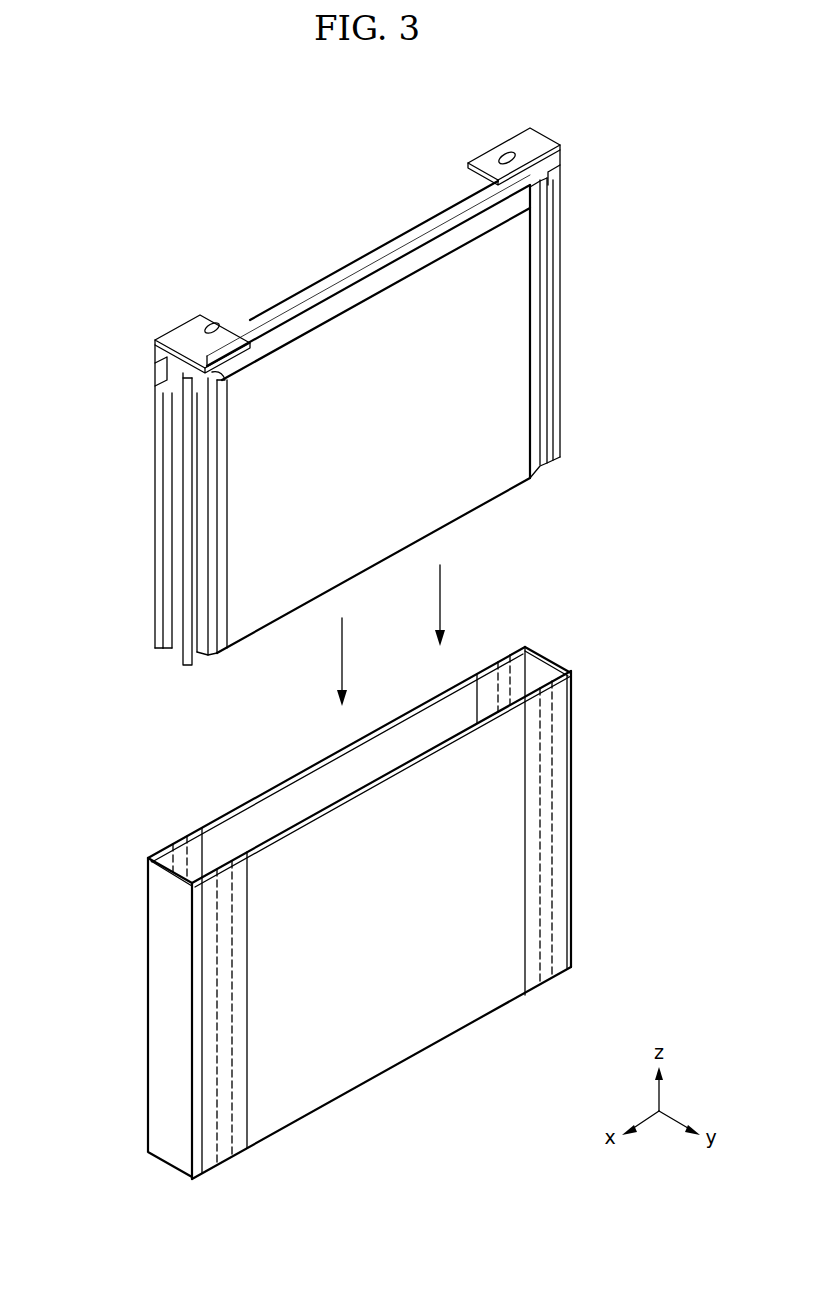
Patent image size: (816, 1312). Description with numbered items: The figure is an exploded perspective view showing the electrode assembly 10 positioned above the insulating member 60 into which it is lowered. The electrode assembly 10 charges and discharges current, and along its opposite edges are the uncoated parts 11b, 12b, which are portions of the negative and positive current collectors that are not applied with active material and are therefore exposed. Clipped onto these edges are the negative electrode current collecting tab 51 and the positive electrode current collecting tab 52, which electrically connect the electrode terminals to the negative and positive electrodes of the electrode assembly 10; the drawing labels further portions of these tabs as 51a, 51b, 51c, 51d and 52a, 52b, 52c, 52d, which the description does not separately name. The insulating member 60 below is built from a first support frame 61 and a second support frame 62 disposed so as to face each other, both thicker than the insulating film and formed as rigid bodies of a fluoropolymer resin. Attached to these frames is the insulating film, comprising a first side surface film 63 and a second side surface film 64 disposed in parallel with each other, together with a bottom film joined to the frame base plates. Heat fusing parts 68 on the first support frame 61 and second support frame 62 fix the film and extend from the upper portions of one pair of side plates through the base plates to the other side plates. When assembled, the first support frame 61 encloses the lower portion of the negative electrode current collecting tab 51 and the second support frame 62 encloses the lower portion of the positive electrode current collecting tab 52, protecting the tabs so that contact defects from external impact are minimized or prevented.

The electrode assembly 10 is at (310, 410).
The uncoated part 11b is at (185, 547).
The uncoated part 12b is at (560, 195).
The negative electrode current collecting tab 51 is at (160, 460).
The hole of first bracket 51a is at (215, 320).
The body of first bracket 51b is at (163, 395).
The end portion of first bracket 51c is at (160, 625).
The top plate of first bracket 51d is at (210, 324).
The positive electrode current collecting tab 52 is at (537, 265).
The hole of second bracket 52a is at (490, 153).
The body of second bracket 52b is at (563, 172).
The end portion of second bracket 52c is at (556, 440).
The top plate of second bracket 52d is at (520, 150).
The insulating member 60 is at (354, 885).
The first support frame 61 is at (224, 1015).
The second support frame 62 is at (540, 665).
The first side surface film 63 is at (400, 735).
The second side surface film 64 is at (345, 820).
The heat fusing parts 68 is at (232, 1080).